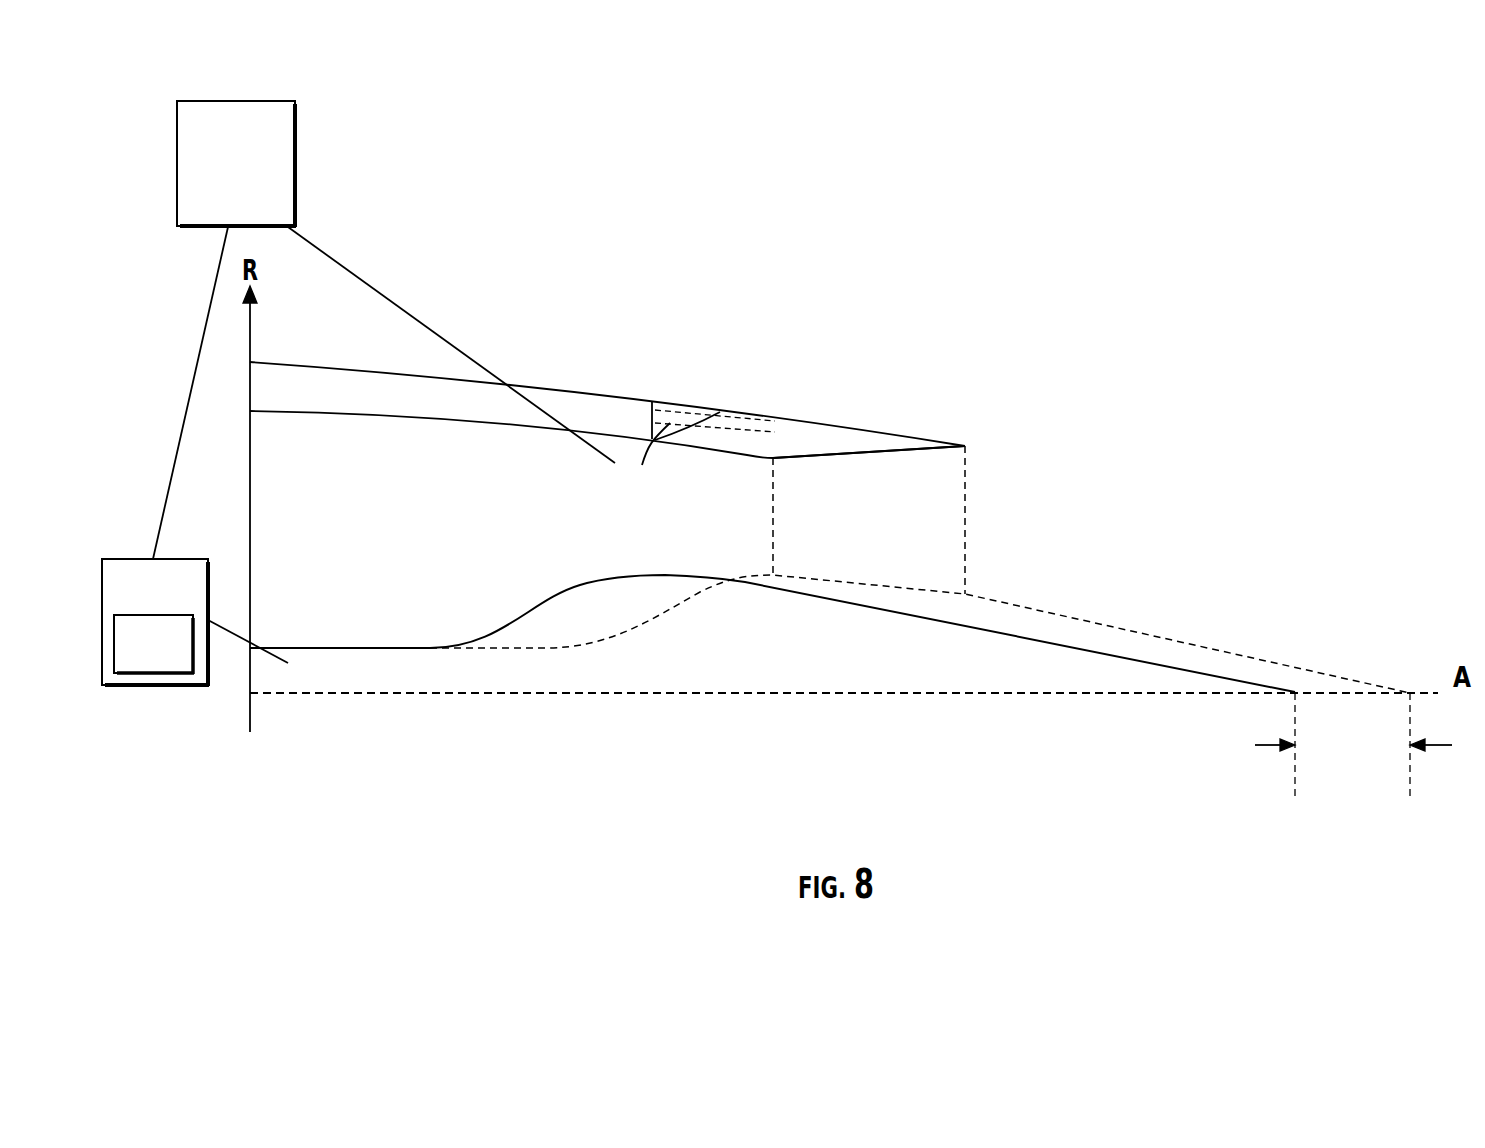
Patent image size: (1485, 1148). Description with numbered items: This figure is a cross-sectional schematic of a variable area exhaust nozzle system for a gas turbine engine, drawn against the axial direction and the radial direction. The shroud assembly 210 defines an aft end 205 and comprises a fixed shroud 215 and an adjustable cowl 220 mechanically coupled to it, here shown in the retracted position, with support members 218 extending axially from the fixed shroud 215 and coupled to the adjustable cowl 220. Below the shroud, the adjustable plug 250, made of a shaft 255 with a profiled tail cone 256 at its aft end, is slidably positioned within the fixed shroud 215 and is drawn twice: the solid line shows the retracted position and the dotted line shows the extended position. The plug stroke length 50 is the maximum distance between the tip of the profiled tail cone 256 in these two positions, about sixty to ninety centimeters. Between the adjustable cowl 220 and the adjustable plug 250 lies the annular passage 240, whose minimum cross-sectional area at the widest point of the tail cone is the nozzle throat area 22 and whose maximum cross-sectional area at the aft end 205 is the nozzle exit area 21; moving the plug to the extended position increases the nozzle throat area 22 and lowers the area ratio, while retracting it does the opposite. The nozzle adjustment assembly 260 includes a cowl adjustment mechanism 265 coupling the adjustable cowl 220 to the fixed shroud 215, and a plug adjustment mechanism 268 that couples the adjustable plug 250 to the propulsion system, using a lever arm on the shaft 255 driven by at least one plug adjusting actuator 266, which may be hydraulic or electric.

The nozzle exit area 21 is at (967, 489).
The nozzle throat area 22 is at (771, 512).
The plug stroke length 50 is at (1438, 745).
The aft end 205 is at (985, 531).
The shroud assembly 210 is at (540, 336).
The fixed shroud 215 is at (333, 393).
The support members 218 is at (683, 400).
The adjustable cowl 220 is at (842, 440).
The annular passage 240 is at (842, 524).
The adjustable plug 250 is at (743, 656).
The shaft 255 is at (361, 668).
The profiled tail cone 256 is at (1020, 667).
The nozzle adjustment assembly 260 is at (216, 177).
The cowl adjustment mechanism 265 is at (504, 363).
The plug adjusting actuator 266 is at (133, 656).
The plug adjustment mechanism 268 is at (134, 599).